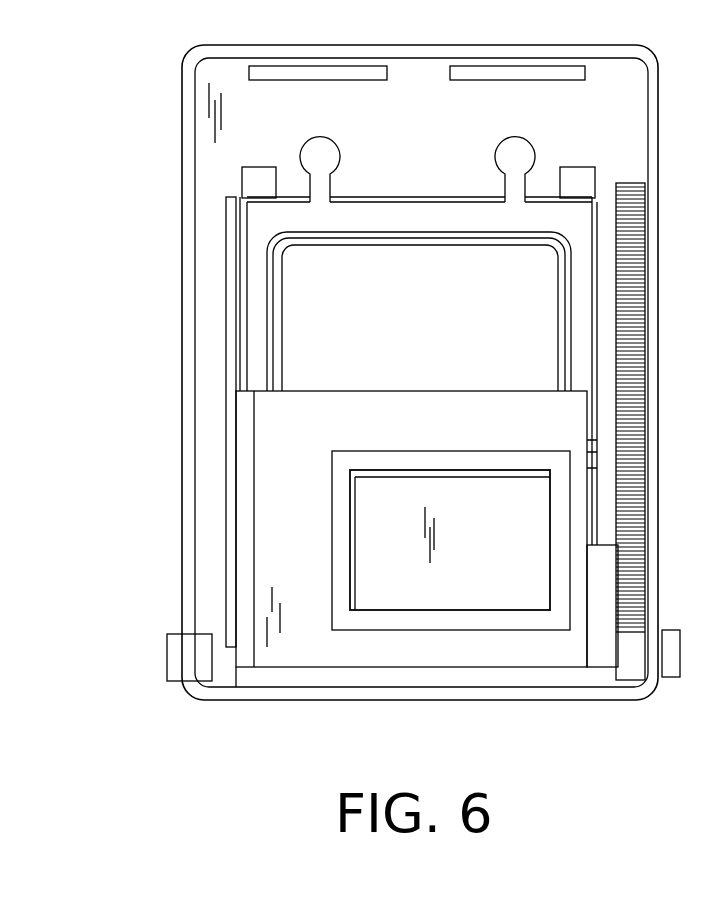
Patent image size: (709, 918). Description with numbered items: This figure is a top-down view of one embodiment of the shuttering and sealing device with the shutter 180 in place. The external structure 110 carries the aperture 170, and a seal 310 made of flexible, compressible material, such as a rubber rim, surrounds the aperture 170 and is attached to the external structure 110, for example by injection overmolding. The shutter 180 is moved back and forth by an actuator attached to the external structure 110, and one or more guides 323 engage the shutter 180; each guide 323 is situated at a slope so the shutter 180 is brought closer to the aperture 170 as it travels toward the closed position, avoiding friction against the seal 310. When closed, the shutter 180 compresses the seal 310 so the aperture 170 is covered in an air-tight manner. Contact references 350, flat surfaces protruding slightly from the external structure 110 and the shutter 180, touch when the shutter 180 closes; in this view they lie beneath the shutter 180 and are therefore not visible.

The external structure 110 is at (186, 238).
The seal 310 is at (413, 215).
The contact references 350 is at (257, 180).
The guide 323 is at (237, 352).
The aperture 170 is at (313, 363).
The shutter 180 is at (452, 410).